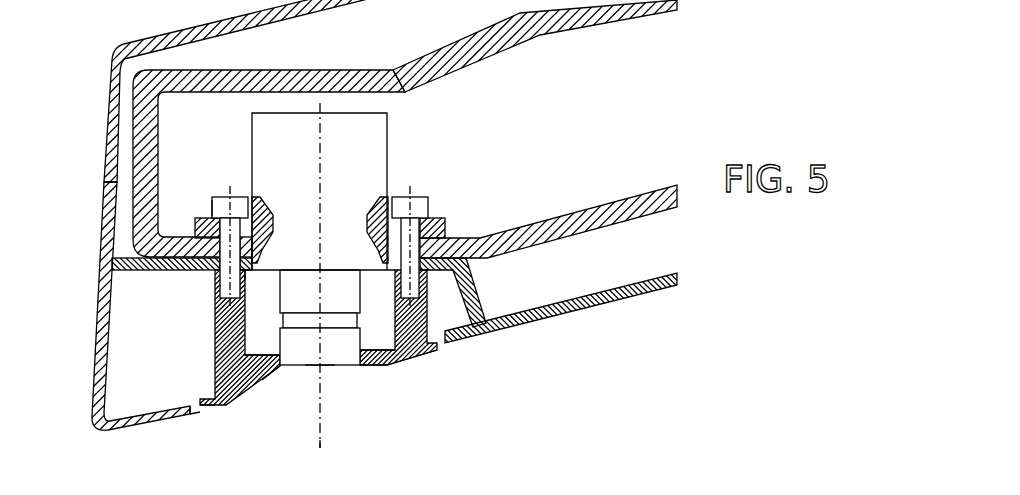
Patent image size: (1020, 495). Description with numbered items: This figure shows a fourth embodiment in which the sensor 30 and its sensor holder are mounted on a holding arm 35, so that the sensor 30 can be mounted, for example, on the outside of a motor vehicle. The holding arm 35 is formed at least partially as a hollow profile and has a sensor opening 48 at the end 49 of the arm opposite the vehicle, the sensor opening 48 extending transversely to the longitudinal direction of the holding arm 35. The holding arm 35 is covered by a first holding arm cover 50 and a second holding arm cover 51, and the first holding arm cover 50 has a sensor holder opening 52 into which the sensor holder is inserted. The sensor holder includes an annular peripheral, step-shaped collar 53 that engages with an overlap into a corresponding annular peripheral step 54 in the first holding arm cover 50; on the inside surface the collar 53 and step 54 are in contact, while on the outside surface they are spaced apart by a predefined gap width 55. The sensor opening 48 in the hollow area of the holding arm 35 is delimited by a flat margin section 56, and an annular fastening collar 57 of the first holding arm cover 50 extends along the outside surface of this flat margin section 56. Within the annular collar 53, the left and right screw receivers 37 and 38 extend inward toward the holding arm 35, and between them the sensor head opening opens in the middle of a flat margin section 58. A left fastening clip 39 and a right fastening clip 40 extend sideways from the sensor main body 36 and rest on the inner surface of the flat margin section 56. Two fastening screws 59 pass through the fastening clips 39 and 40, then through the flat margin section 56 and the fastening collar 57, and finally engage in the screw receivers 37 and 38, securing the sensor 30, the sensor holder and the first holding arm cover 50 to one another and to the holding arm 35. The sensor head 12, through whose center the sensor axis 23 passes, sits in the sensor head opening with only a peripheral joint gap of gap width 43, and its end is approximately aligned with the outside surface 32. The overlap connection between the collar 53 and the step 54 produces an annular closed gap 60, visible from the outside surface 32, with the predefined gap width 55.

The sensor head 12 is at (330, 300).
The sensor axis 23 is at (322, 422).
The sensor 30 is at (362, 182).
The outside surface 32 is at (383, 370).
The holding arm 35 is at (560, 26).
The sensor main body 36 is at (361, 150).
The left screw receiver 37 is at (215, 322).
The right screw receiver 38 is at (428, 318).
The left fastening clip 39 is at (211, 207).
The right fastening clip 40 is at (437, 217).
The gap width 43 is at (276, 372).
The sensor opening 48 is at (251, 277).
The end 49 is at (98, 52).
The first holding arm cover 50 is at (99, 222).
The second holding arm cover 51 is at (106, 155).
The sensor holder opening 52 is at (304, 387).
The step-shaped collar 53 is at (187, 397).
The annular peripheral step 54 is at (187, 420).
The gap width 55 is at (200, 413).
The flat margin section 56 is at (180, 240).
The annular fastening collar 57 is at (140, 268).
The flat margin section 58 is at (266, 350).
The fastening screws 59 is at (224, 197).
The annular closed gap 60 is at (442, 353).